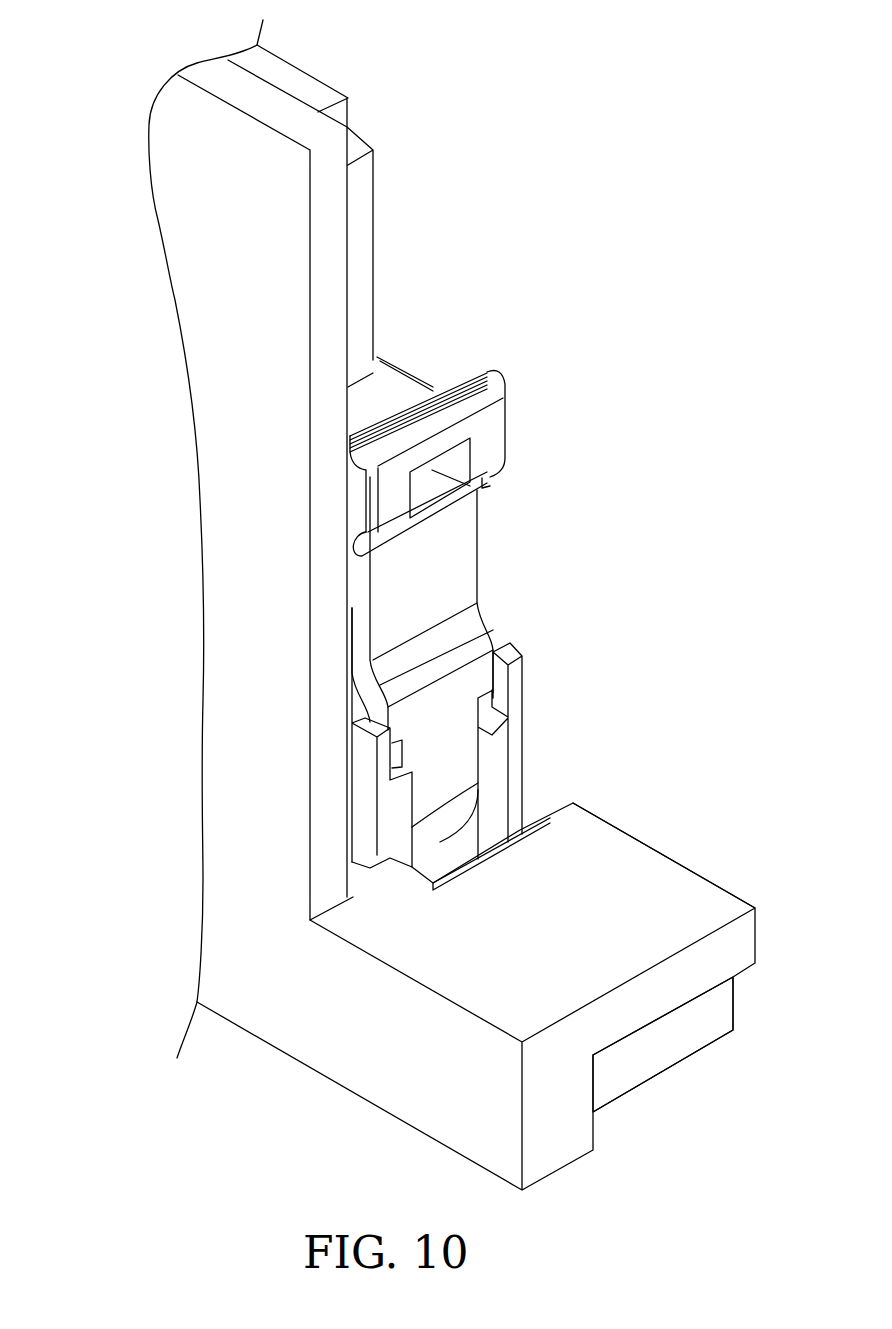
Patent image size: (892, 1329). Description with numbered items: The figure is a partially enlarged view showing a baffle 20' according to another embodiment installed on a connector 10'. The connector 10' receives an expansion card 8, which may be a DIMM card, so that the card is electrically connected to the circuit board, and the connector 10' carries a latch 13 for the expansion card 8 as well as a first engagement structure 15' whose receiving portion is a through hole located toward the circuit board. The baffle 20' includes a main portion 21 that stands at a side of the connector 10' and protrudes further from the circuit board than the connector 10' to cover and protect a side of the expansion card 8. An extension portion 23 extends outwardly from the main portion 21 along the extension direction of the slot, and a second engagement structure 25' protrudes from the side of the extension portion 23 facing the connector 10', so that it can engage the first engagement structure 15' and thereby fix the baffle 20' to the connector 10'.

The baffle 20' is at (442, 605).
The expansion card 8 is at (297, 85).
The main portion 21 is at (260, 625).
The extension portion 23 is at (383, 1098).
The second engagement structure 25' is at (664, 805).
The first engagement structure 15' is at (703, 1044).
The connector 10' is at (510, 623).
The latch 13 is at (493, 435).